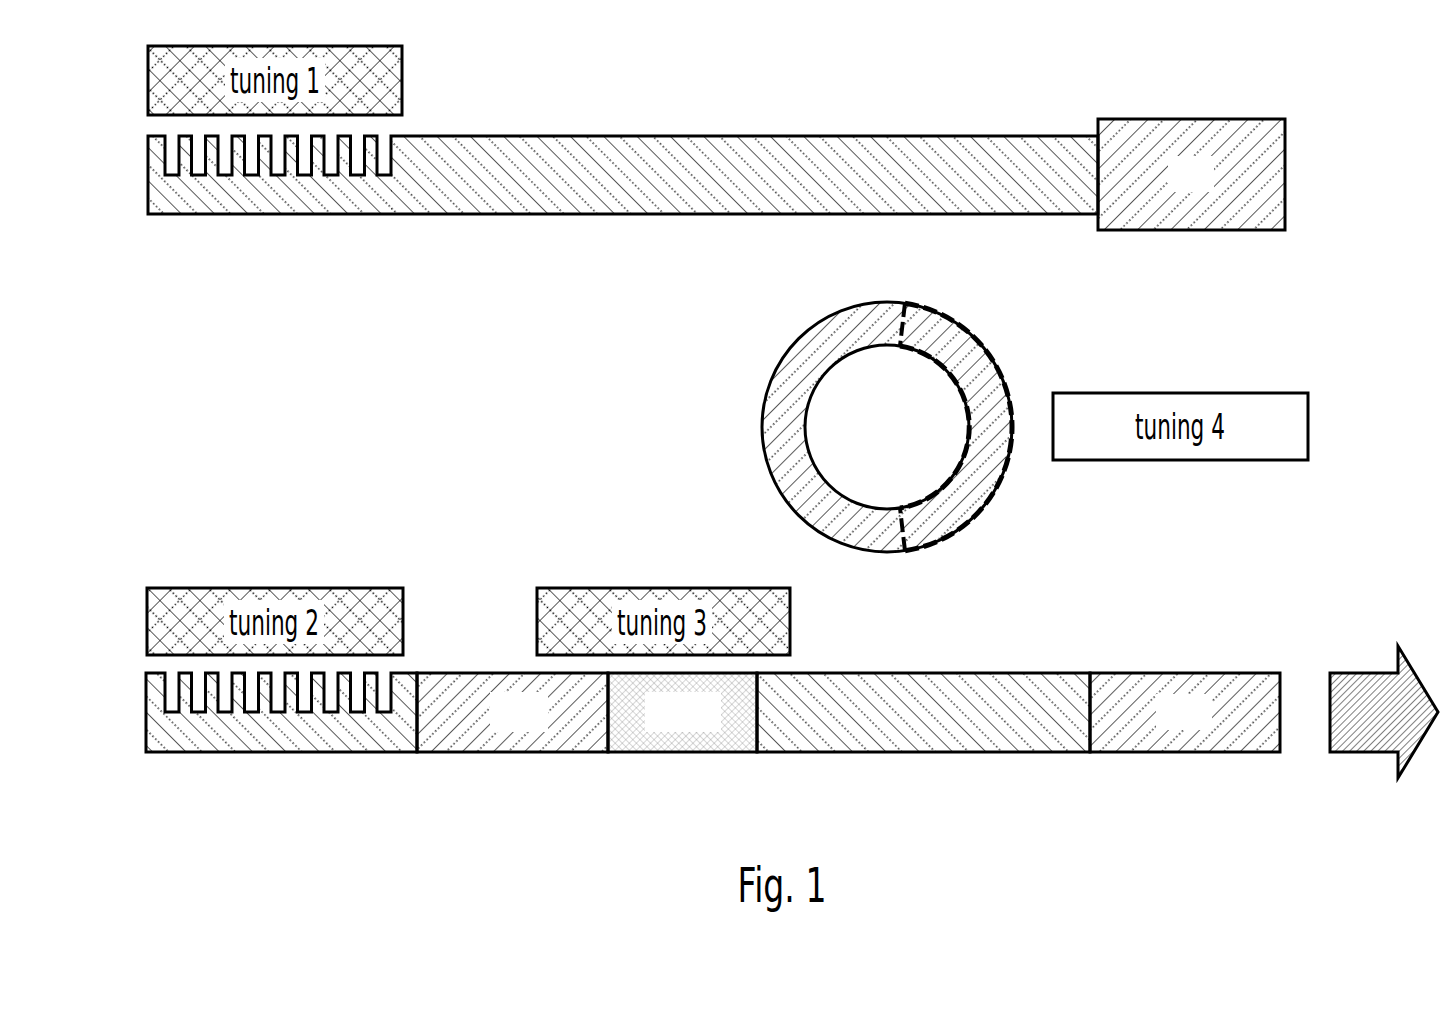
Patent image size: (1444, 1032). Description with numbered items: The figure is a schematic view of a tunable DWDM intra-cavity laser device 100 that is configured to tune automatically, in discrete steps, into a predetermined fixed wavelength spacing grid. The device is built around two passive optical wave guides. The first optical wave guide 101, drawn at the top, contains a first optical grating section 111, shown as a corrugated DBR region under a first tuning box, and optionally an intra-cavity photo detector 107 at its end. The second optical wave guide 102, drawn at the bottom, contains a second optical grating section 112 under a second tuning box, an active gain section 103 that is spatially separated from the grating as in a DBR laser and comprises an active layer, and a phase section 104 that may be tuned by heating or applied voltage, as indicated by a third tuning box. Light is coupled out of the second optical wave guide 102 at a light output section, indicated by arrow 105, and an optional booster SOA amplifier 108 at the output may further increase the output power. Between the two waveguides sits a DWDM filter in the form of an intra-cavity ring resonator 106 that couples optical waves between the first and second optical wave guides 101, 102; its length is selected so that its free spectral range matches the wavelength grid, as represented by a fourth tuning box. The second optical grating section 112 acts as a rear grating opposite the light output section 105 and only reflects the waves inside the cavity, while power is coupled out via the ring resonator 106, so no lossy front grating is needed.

The tunable DWDM intra-cavity laser device 100 is at (1391, 67).
The first optical wave guide 101 is at (621, 136).
The second optical wave guide 102 is at (968, 752).
The active gain section 103 is at (520, 752).
The phase section 104 is at (683, 752).
The light output section 105 is at (1366, 752).
The intra-cavity ring resonator 106 is at (790, 346).
The intra-cavity photo detector 107 is at (1285, 170).
The booster SOA amplifier 108 is at (1188, 752).
The first optical grating section 111 is at (148, 172).
The second optical grating section 112 is at (146, 712).